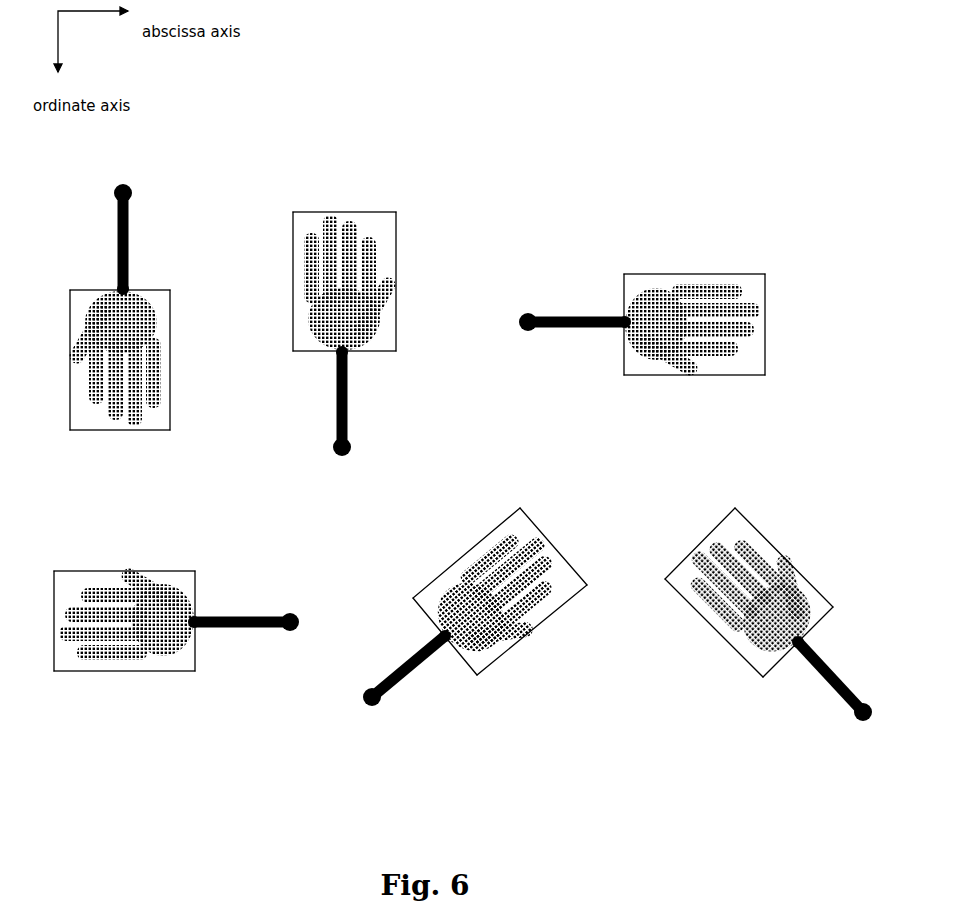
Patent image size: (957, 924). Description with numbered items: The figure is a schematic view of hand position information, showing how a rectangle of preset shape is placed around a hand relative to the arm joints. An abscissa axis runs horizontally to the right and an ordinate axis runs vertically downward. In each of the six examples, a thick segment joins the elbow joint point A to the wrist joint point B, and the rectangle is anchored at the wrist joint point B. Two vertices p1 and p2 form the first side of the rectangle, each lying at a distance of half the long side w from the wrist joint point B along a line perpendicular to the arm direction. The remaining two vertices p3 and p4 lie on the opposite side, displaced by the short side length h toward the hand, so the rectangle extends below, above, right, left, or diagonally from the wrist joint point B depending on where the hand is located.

The elbow joint point A is at (505, 461).
The wrist joint point B is at (475, 472).
The first vertex of the first side of the rectangle p1 is at (440, 476).
The second vertex of the first side of the rectangle p2 is at (466, 498).
The first vertex of another side of the rectangle p3 is at (402, 411).
The second vertex of another side of the rectangle p4 is at (403, 460).